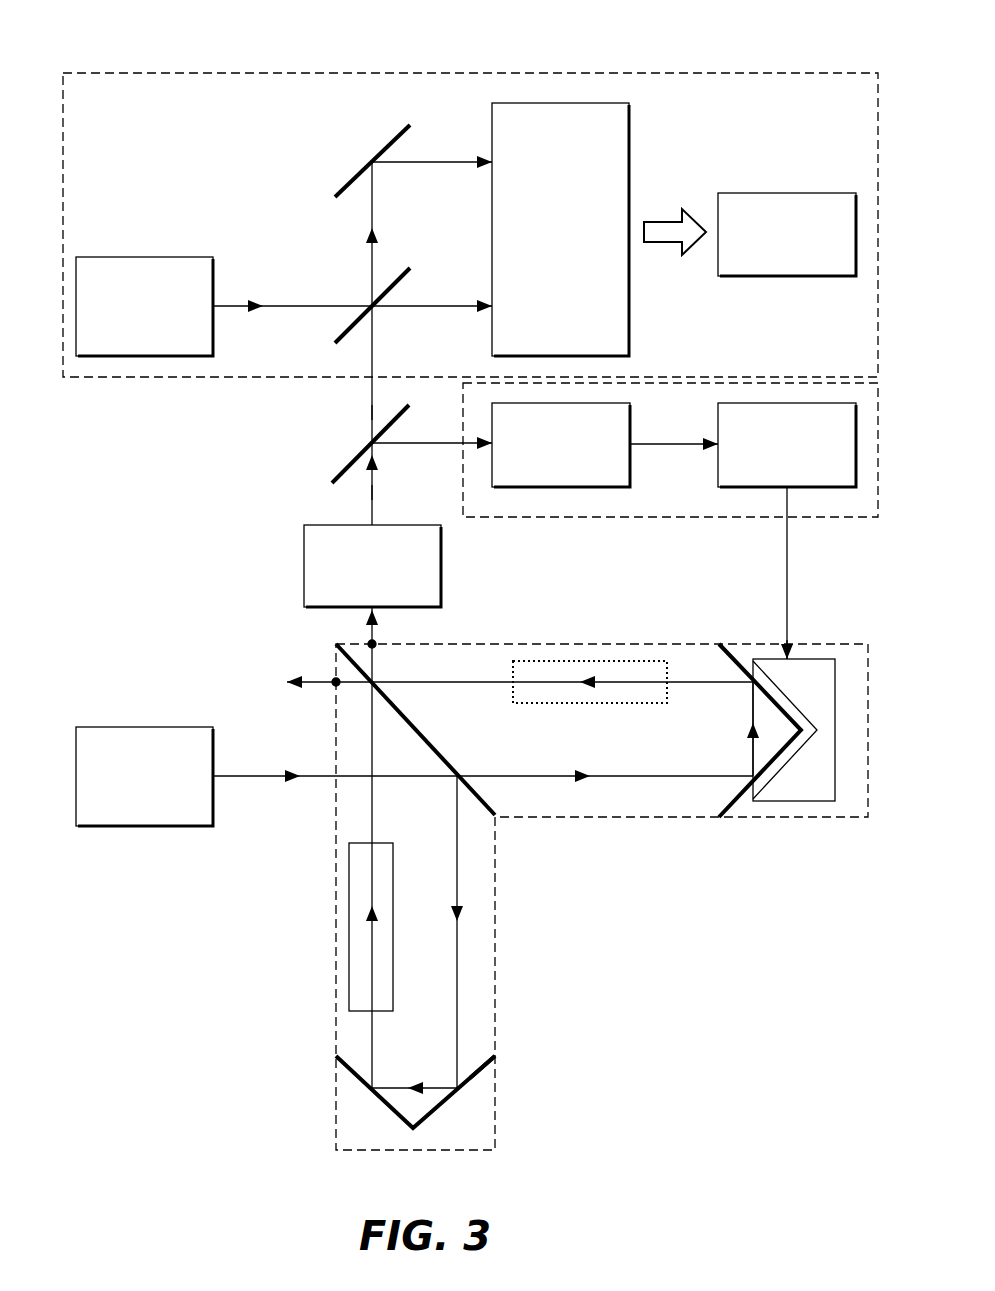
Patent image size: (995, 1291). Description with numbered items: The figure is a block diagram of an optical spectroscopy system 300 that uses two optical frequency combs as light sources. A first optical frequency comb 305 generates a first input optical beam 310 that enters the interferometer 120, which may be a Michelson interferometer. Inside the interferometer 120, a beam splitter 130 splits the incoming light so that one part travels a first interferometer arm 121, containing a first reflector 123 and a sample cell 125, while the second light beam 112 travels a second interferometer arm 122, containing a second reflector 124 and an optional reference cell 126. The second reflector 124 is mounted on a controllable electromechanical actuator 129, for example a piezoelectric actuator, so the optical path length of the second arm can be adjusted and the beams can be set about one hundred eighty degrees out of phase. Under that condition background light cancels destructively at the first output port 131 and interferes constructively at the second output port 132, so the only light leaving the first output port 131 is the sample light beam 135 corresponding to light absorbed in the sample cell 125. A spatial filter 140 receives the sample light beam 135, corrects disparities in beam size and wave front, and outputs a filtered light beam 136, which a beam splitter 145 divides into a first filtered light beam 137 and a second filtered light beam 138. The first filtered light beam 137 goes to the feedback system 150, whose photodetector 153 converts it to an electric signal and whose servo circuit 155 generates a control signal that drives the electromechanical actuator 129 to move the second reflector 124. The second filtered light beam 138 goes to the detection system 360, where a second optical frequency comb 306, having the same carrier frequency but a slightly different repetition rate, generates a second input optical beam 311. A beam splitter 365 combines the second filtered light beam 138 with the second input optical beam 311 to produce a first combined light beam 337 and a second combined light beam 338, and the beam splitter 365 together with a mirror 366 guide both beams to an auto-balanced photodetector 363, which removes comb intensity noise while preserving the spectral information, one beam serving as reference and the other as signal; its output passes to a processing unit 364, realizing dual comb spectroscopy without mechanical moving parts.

The optical spectroscopy system 300 is at (438, 33).
The detection system 360 is at (735, 73).
The second optical frequency comb 306 is at (150, 257).
The second input optical beam 311 is at (223, 306).
The beam splitter 365 is at (372, 304).
The mirror 366 is at (372, 158).
The second combined light beam 338 is at (432, 162).
The first combined light beam 337 is at (430, 306).
The auto-balanced photodetector 363 is at (630, 134).
The processing unit 364 is at (790, 193).
The feedback system 150 is at (733, 518).
The photodetector 153 is at (631, 415).
The servo circuit 155 is at (755, 403).
The beam splitter 145 is at (352, 463).
The second filtered light beam 138 is at (372, 414).
The filtered light beam 136 is at (372, 492).
The first filtered light beam 137 is at (433, 446).
The spatial filter 140 is at (304, 557).
The sample light beam 135 is at (378, 640).
The first output port 131 is at (368, 643).
The interferometer 120 is at (568, 878).
The beam splitter 130 is at (444, 729).
The second output port 132 is at (334, 686).
The reference cell 126 is at (598, 661).
The first optical frequency comb 305 is at (118, 727).
The first input optical beam 310 is at (257, 785).
The second light beam 112 is at (532, 776).
The second reflector 124 is at (728, 818).
The electromechanical actuator 129 is at (837, 682).
The second interferometer arm 122 is at (817, 644).
The sample cell 125 is at (349, 947).
The first interferometer arm 121 is at (336, 1112).
The first reflector 123 is at (496, 1077).